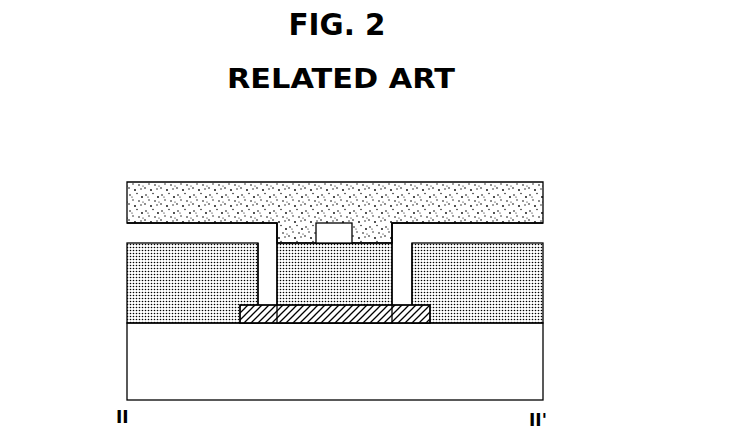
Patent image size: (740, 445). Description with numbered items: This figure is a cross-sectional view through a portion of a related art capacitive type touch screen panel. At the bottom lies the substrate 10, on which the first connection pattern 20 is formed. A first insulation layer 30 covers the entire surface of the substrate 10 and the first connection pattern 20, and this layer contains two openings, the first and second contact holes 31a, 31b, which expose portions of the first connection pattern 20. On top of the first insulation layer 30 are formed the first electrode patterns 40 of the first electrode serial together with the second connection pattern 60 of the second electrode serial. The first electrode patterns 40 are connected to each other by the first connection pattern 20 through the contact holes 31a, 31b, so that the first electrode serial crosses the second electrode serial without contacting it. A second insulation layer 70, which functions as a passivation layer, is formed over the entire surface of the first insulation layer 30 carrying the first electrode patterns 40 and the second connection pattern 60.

The substrate 10 is at (533, 368).
The first connection pattern 20 is at (336, 323).
The first insulation layer 30 is at (535, 278).
The first contact hole 31a is at (258, 257).
The second contact hole 31b is at (391, 257).
The first electrode patterns 40 is at (135, 230).
The second connection pattern 60 is at (336, 228).
The second insulation layer 70 is at (533, 203).